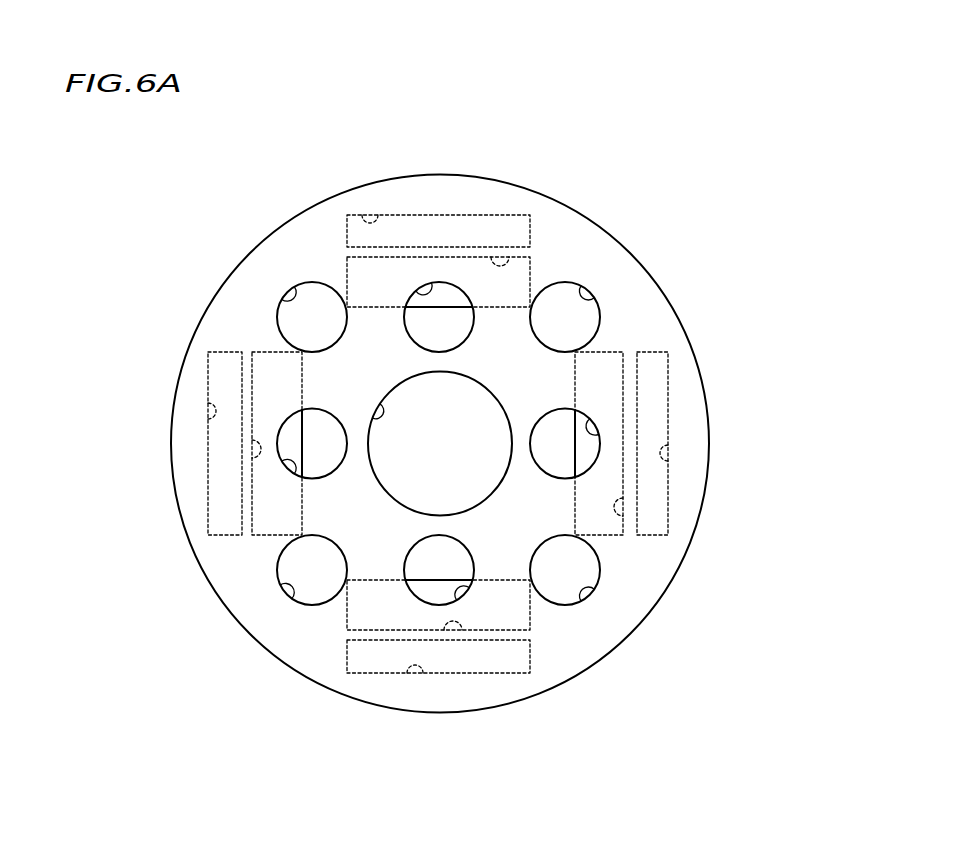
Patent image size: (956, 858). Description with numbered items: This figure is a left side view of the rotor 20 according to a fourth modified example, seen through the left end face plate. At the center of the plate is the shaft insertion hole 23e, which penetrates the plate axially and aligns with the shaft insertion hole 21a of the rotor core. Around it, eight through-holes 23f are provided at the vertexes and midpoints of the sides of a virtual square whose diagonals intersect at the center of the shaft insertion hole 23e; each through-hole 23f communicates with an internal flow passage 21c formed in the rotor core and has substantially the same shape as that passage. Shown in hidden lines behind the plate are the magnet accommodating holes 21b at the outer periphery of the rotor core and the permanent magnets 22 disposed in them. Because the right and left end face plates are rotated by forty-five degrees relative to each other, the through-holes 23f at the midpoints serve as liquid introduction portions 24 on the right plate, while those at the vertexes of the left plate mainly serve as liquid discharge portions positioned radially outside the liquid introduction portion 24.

The rotor 20 is at (746, 187).
The shaft insertion hole 21a is at (508, 419).
The magnet accommodating hole 21b is at (378, 216).
The internal flow passage 21c is at (508, 254).
The permanent magnet 22 is at (458, 214).
The shaft insertion hole 23e is at (378, 411).
The through-hole 23f is at (433, 292).
The liquid introduction portion 24 is at (438, 443).